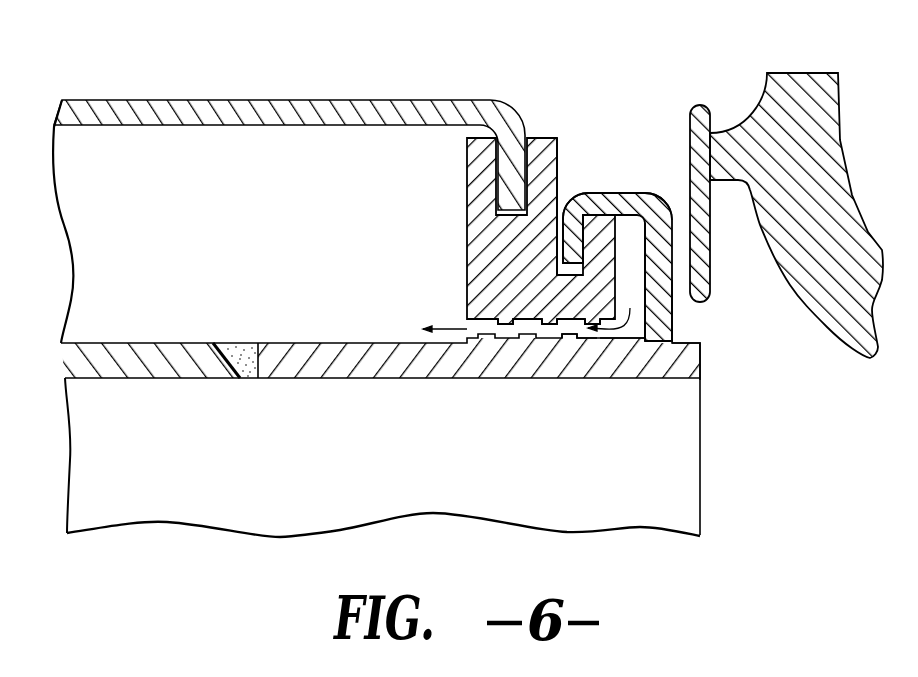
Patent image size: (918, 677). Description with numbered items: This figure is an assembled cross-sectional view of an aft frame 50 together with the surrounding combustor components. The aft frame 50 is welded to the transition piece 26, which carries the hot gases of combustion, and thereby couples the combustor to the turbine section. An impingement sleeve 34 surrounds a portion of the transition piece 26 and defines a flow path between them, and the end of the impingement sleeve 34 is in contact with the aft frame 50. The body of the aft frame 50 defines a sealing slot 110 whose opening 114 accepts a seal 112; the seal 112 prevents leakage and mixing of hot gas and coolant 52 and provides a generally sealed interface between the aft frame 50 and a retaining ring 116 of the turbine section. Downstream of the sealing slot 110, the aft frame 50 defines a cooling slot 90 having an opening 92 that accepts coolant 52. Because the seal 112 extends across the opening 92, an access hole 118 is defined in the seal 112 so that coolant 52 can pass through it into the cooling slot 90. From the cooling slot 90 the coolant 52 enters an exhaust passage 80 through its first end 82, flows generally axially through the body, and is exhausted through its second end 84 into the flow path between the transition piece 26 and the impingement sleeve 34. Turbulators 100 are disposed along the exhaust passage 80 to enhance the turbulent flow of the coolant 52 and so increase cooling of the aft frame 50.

The transition piece 26 is at (113, 368).
The impingement sleeve 34 is at (283, 98).
The aft frame 50 is at (718, 357).
The coolant 52 is at (627, 238).
The exhaust passage 80 is at (597, 336).
The first end 82 is at (622, 333).
The second end 84 is at (460, 337).
The cooling slot 90 is at (637, 292).
The opening 92 is at (640, 232).
The turbulator 100 is at (547, 323).
The sealing slot 110 is at (570, 263).
The seal 112 is at (700, 117).
The opening 114 is at (562, 193).
The retaining ring 116 is at (797, 90).
The access hole 118 is at (620, 196).